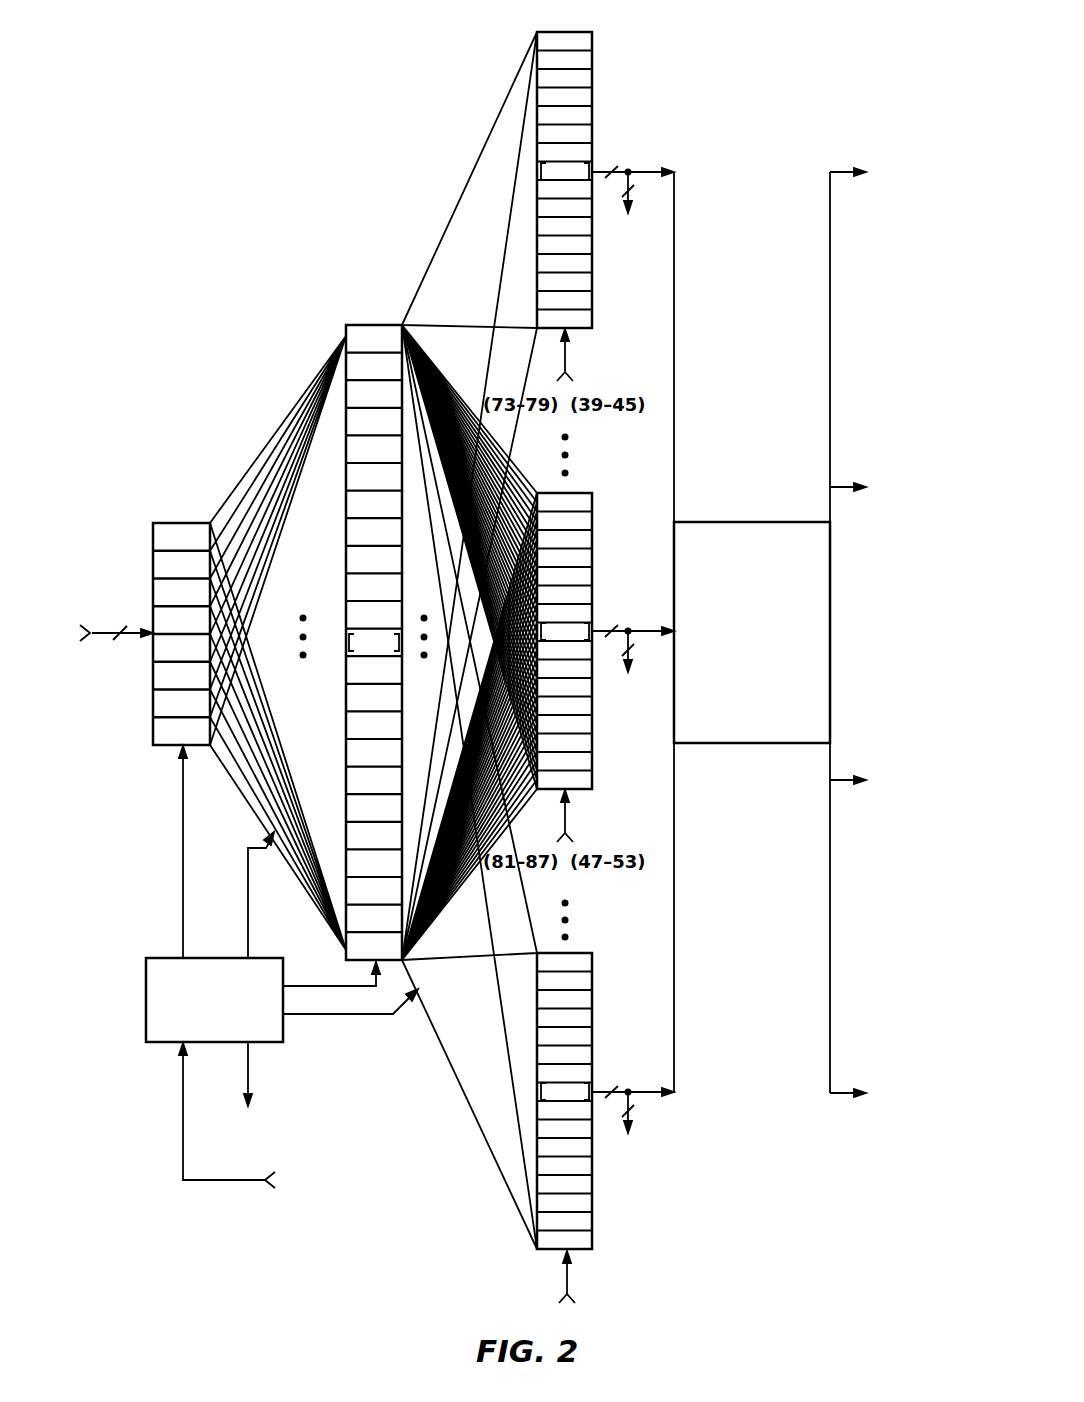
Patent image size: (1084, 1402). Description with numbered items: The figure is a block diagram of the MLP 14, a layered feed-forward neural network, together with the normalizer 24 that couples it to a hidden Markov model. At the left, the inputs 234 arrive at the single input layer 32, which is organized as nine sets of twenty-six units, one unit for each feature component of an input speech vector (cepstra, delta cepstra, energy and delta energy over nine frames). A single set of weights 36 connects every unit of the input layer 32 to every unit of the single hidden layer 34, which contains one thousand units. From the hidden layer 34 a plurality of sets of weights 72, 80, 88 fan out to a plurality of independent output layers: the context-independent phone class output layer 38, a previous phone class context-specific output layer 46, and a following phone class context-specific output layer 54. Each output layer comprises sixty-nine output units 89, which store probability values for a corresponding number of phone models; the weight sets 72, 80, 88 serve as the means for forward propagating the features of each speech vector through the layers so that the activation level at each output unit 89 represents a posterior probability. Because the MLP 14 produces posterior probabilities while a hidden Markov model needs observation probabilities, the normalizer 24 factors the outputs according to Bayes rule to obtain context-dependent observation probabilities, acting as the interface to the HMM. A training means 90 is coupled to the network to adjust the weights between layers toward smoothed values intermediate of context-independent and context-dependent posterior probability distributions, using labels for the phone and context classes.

The MLP 14 is at (605, 657).
The normalizer 24 is at (673, 585).
The input layer 32 is at (162, 522).
The hidden layer 34 is at (362, 324).
The set of weights 36 is at (255, 463).
The output layer 38 is at (588, 492).
The output layer 46 is at (588, 31).
The output layer 54 is at (588, 952).
The set of weights 72 is at (428, 366).
The set of weights 80 is at (502, 231).
The set of weights 88 is at (500, 1056).
The output units 89 is at (592, 42).
The training means 90 is at (155, 957).
The inputs 234 is at (116, 622).